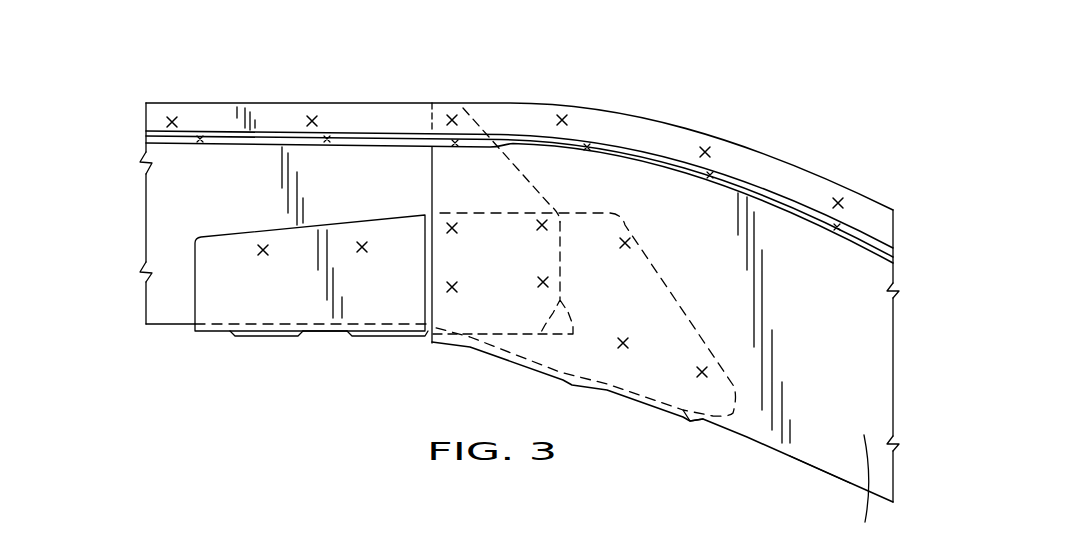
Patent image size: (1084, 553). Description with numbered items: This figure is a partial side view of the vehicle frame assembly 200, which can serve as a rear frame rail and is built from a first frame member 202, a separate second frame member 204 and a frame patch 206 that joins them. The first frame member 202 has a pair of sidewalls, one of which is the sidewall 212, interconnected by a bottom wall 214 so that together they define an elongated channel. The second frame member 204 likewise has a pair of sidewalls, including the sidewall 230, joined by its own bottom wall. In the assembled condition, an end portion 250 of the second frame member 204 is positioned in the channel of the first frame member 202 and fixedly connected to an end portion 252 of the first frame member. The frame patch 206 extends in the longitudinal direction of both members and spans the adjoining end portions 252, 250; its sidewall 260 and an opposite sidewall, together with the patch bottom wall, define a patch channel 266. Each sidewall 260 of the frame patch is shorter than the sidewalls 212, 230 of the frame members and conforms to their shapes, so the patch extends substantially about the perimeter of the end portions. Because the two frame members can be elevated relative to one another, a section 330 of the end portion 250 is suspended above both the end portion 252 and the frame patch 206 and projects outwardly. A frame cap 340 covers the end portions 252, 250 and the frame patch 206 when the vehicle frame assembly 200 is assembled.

The vehicle frame assembly 200 is at (725, 115).
The first frame member 202 is at (818, 466).
The second frame member 204 is at (164, 317).
The frame patch 206 is at (323, 326).
The sidewall 212 is at (857, 494).
The bottom wall 214 is at (750, 441).
The sidewall 230 is at (228, 178).
The end portion 250 is at (530, 157).
The end portion 252 is at (468, 168).
The sidewall 260 is at (383, 295).
The patch channel 266 is at (273, 337).
The section 330 is at (560, 303).
The frame cap 340 is at (630, 143).